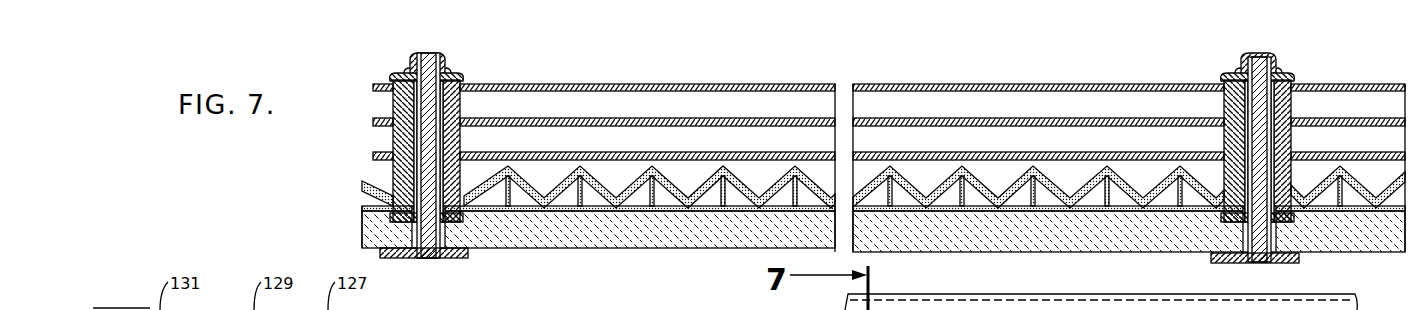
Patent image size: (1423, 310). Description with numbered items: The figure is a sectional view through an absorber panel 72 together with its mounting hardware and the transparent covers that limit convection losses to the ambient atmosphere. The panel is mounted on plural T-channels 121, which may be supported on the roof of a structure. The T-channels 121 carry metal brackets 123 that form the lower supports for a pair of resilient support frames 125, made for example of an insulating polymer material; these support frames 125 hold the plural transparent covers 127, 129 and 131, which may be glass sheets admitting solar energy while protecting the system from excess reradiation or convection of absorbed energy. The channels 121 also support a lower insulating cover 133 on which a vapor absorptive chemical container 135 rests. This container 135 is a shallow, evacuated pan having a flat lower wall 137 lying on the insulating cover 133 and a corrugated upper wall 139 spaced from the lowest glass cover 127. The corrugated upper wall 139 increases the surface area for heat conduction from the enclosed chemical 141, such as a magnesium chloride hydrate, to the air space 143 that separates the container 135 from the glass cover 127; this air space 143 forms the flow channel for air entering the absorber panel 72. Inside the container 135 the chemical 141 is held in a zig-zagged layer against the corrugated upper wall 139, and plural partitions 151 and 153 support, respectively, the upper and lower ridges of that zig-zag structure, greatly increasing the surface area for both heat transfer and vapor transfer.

The absorber panel 72 is at (886, 80).
The T-channel 121 is at (437, 259).
The metal bracket 123 is at (427, 250).
The resilient support frame 125 is at (461, 100).
The transparent cover 127 is at (553, 152).
The transparent cover 129 is at (607, 118).
The transparent cover 131 is at (677, 84).
The lower insulating cover 133 is at (530, 249).
The vapor absorptive chemical container 135 is at (987, 176).
The flat lower wall 137 is at (1093, 212).
The corrugated upper wall 139 is at (1058, 184).
The enclosed chemical 141 is at (947, 196).
The air space 143 is at (1202, 174).
The partition 151 is at (780, 204).
The partition 153 is at (683, 207).